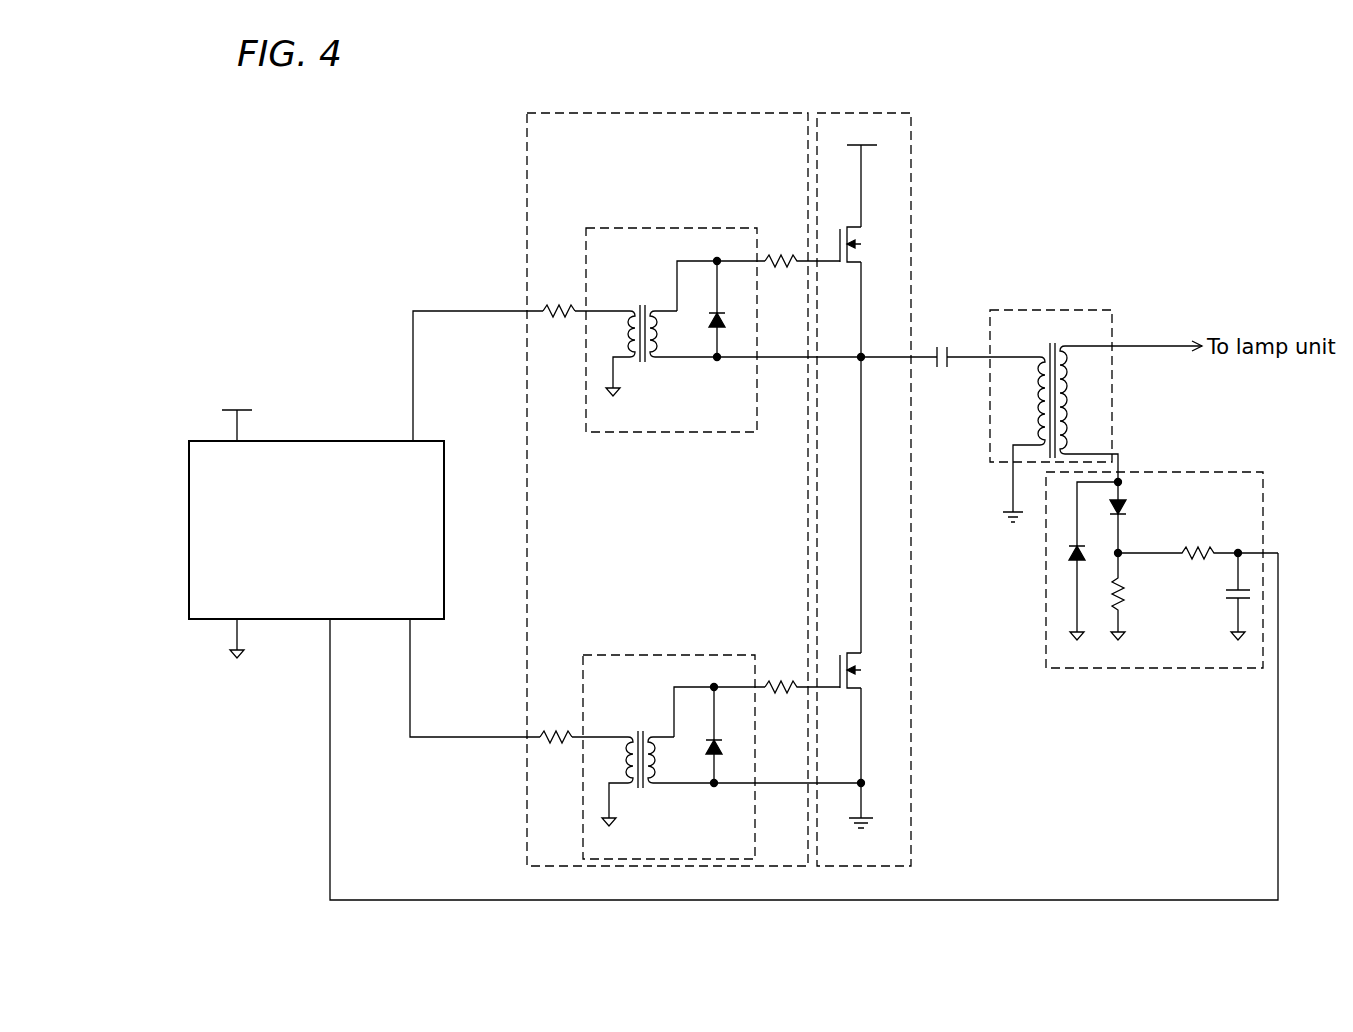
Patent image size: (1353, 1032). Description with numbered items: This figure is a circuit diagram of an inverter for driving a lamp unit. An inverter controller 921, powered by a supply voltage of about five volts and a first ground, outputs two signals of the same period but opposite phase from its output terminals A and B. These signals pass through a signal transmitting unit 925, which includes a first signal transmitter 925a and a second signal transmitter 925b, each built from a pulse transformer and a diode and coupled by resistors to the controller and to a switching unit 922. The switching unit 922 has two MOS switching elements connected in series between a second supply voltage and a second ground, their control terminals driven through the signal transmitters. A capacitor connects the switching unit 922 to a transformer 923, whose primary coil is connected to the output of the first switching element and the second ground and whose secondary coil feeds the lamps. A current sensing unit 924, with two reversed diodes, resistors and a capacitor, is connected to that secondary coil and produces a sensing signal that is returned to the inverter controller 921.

The inverter controller 921 is at (318, 441).
The switching unit 922 is at (866, 113).
The transformer 923 is at (1052, 310).
The current sensing unit 924 is at (1214, 472).
The signal transmitting unit 925 is at (662, 113).
The first signal transmitter 925a is at (657, 228).
The second signal transmitter 925b is at (657, 655).